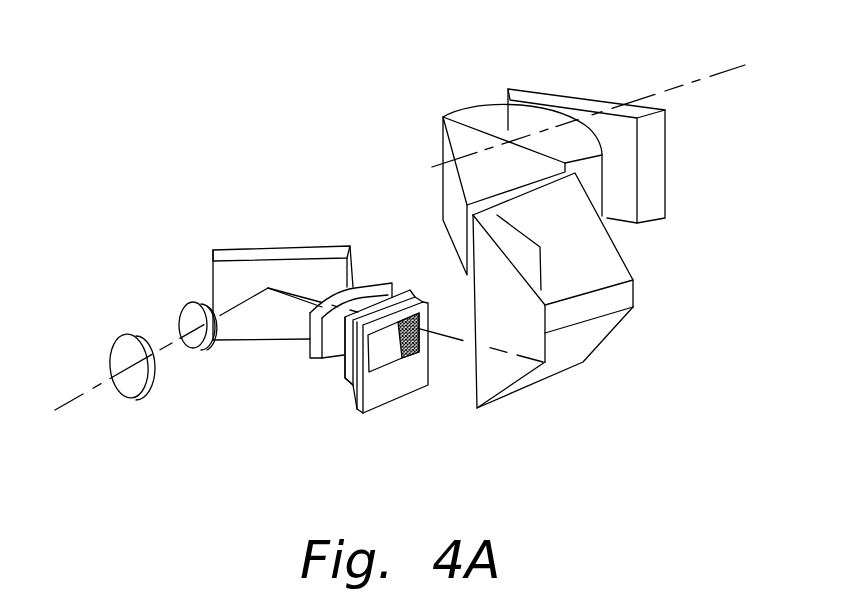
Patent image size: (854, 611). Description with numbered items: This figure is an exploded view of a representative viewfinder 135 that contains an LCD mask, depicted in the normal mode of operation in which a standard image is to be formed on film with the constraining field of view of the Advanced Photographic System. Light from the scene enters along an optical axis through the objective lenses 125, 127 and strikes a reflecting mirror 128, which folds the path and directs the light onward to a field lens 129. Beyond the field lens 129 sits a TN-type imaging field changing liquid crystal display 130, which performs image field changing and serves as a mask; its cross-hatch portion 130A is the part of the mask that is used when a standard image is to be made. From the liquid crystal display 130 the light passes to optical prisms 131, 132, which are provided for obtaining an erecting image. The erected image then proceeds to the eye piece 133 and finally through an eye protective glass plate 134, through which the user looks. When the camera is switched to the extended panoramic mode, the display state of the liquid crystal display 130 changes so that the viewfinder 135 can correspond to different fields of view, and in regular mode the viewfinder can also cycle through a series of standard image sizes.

The objective lens 125 is at (112, 352).
The objective lens 127 is at (180, 315).
The reflecting mirror 128 is at (250, 249).
The field lens 129 is at (313, 359).
The imaging field changing liquid crystal display 130 is at (392, 400).
The cross-hatch portion of the LCD 130A is at (418, 355).
The optical prism 131 is at (620, 326).
The optical prism 132 is at (441, 152).
The eye piece 133 is at (474, 108).
The eye protective glass plate 134 is at (530, 90).
The viewfinder 135 is at (243, 108).